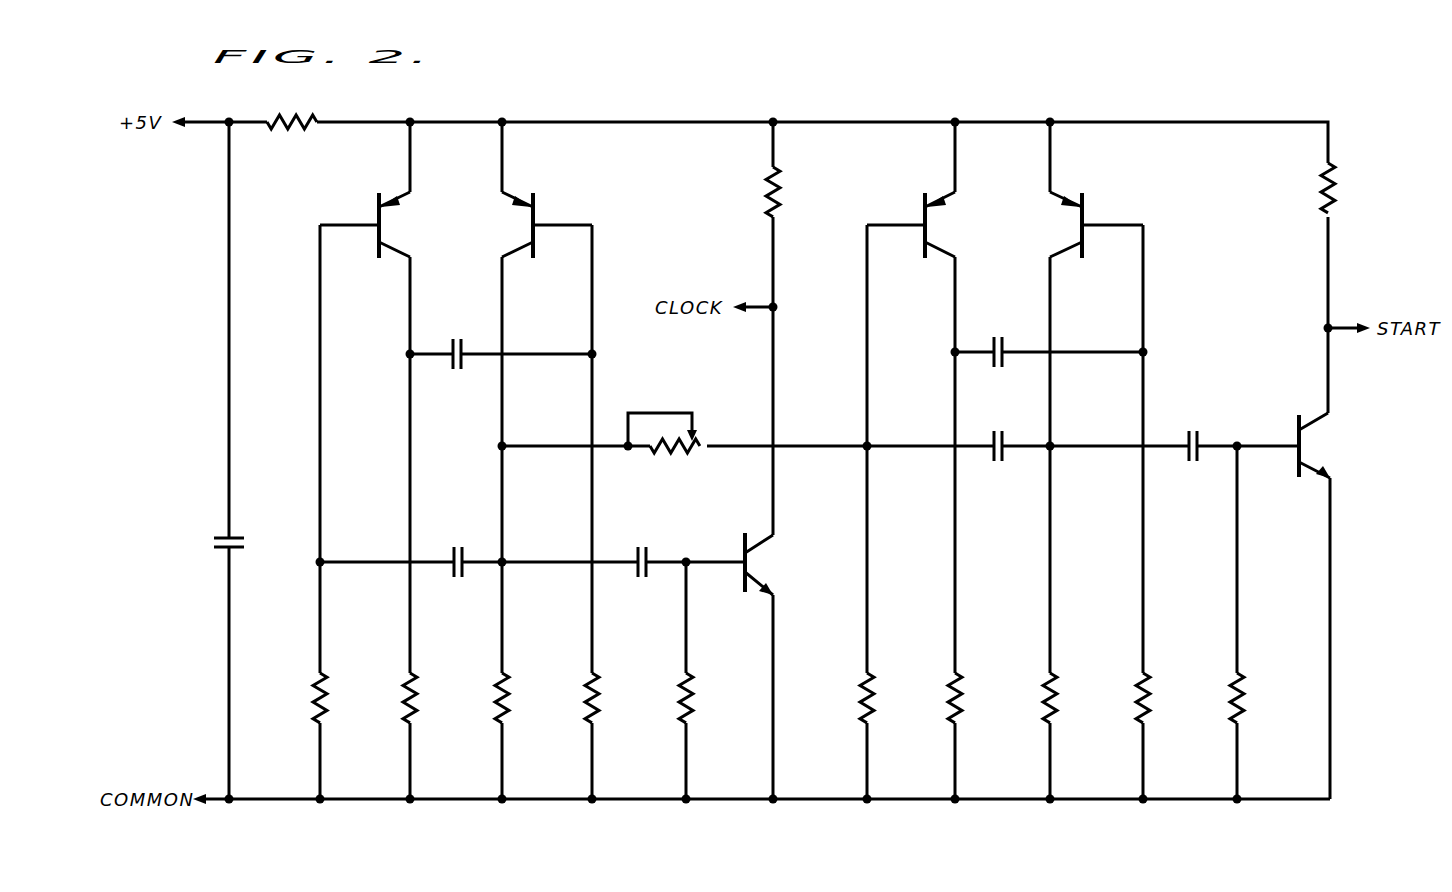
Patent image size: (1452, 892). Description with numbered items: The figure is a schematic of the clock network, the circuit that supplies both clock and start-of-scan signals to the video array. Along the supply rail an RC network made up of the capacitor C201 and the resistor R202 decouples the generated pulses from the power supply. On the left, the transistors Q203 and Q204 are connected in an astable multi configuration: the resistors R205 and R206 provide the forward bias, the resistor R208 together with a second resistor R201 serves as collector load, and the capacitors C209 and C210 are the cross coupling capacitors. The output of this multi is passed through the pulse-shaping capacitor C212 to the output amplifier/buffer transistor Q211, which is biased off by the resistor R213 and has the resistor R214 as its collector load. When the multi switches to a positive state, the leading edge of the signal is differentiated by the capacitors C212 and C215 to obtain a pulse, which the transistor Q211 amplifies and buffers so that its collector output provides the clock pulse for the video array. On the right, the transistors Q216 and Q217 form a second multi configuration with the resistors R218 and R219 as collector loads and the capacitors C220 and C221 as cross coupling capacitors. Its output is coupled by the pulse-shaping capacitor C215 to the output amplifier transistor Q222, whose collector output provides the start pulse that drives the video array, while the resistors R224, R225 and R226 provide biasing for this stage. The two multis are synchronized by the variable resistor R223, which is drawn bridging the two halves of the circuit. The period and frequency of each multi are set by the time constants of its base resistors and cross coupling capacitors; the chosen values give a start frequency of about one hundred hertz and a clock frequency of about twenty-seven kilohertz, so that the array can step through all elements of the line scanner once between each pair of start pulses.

The resistor R202 is at (290, 111).
The capacitor C201 is at (224, 537).
The transistor Q203 is at (378, 201).
The transistor Q204 is at (531, 224).
The transistor Q216 is at (924, 201).
The transistor Q217 is at (1080, 224).
The resistor R214 is at (768, 176).
The resistor R226 is at (1320, 176).
The capacitor C209 is at (478, 331).
The capacitor C220 is at (1022, 329).
The capacitor C221 is at (1022, 411).
The capacitor C215 is at (1218, 416).
The capacitor C210 is at (480, 540).
The capacitor C212 is at (663, 540).
The variable resistor R223 is at (665, 447).
The transistor Q211 is at (764, 558).
The transistor Q222 is at (1306, 428).
The resistor R205 is at (317, 684).
The resistor R201 is at (408, 714).
The resistor R208 is at (500, 684).
The resistor R206 is at (590, 714).
The resistor R213 is at (684, 684).
The resistor R218 is at (865, 684).
The resistor R225 is at (984, 698).
The resistor R219 is at (1141, 684).
The resistor R224 is at (1244, 684).